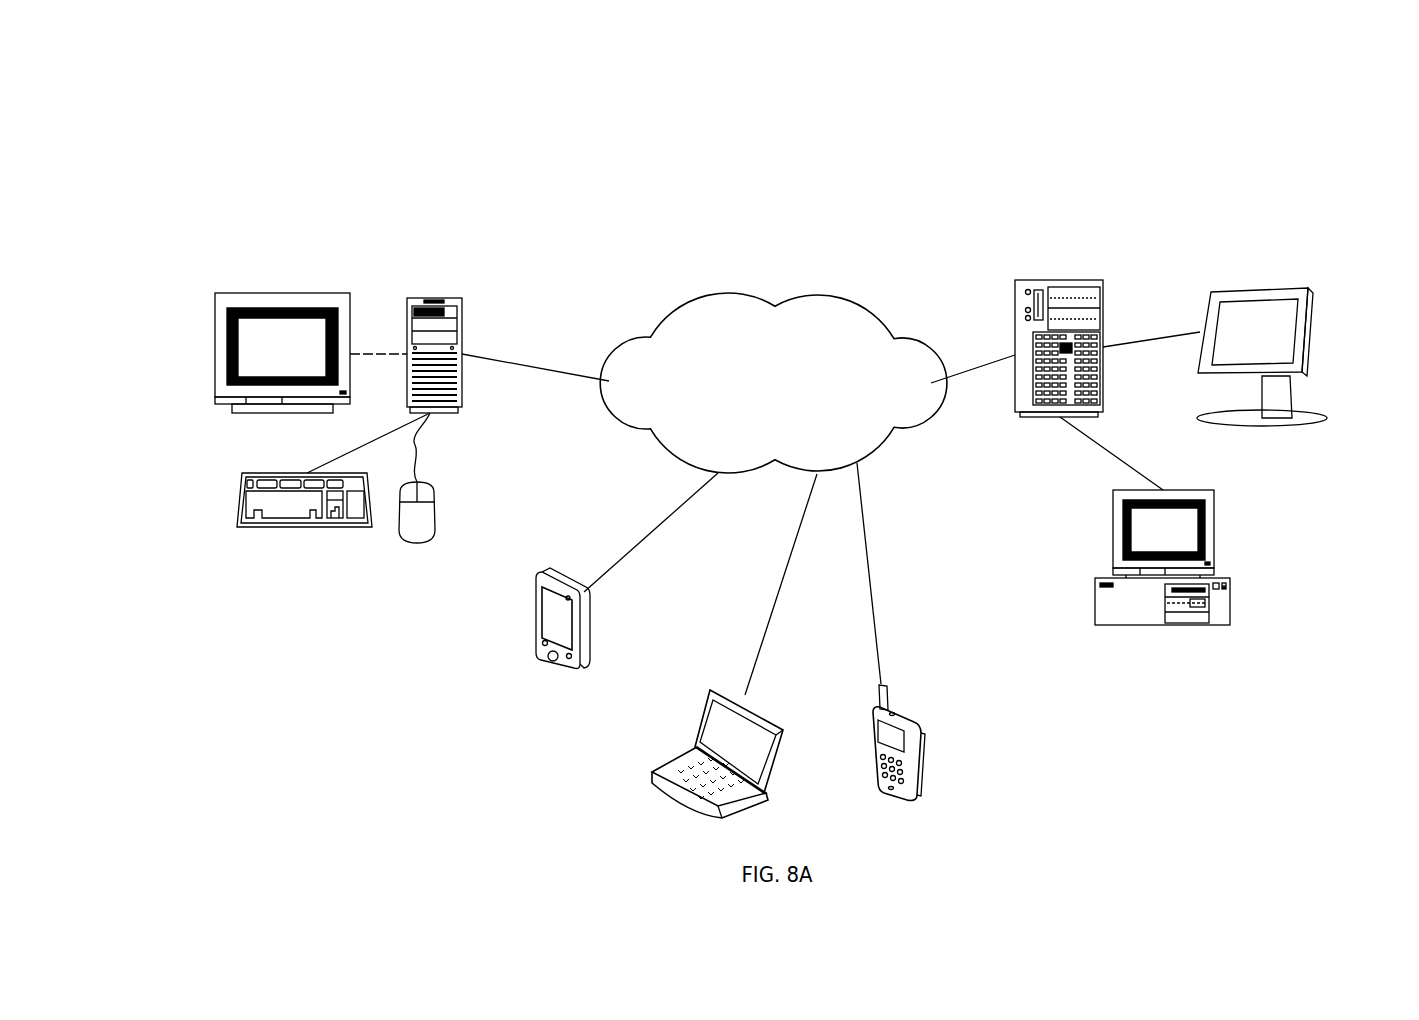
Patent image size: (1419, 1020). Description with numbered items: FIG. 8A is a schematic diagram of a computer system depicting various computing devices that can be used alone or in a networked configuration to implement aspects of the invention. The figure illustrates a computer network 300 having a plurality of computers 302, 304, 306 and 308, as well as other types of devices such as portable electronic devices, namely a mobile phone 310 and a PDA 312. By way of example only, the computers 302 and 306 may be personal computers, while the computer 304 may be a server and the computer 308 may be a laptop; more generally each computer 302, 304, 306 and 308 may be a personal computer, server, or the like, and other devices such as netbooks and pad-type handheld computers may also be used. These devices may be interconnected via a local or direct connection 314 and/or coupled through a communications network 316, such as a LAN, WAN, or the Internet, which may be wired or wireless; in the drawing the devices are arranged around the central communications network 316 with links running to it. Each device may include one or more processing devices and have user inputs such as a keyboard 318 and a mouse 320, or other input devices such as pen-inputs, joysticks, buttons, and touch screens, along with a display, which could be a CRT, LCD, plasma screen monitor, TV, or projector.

The computer network 300 is at (782, 98).
The computer 302 is at (438, 298).
The computer 304 is at (1103, 280).
The computer 306 is at (1095, 598).
The computer 308 is at (648, 777).
The mobile phone 310 is at (923, 740).
The PDA 312 is at (532, 657).
The local or direct connection 314 is at (1107, 452).
The communications network 316 is at (820, 293).
The keyboard 318 is at (237, 505).
The mouse 320 is at (435, 505).